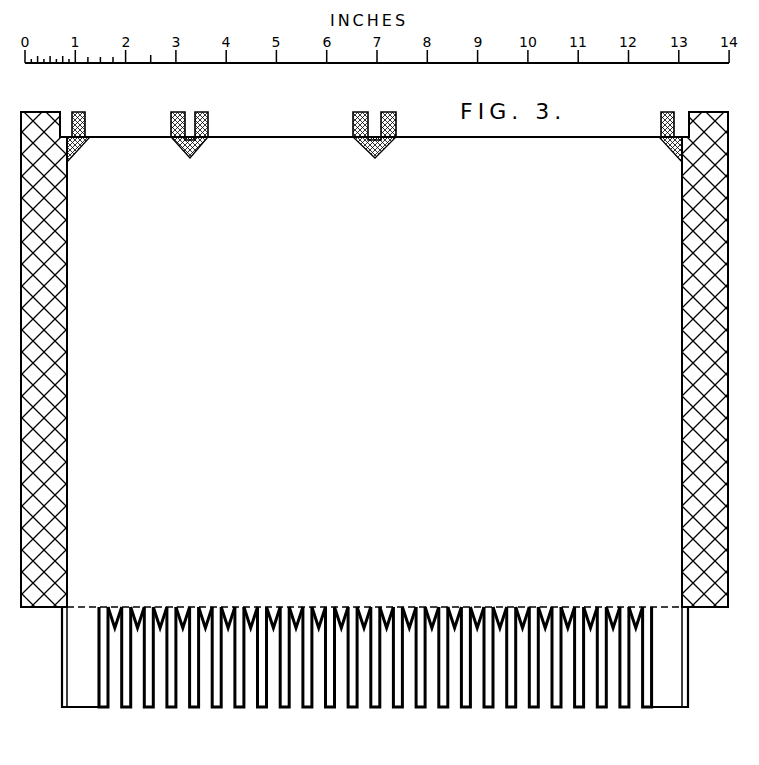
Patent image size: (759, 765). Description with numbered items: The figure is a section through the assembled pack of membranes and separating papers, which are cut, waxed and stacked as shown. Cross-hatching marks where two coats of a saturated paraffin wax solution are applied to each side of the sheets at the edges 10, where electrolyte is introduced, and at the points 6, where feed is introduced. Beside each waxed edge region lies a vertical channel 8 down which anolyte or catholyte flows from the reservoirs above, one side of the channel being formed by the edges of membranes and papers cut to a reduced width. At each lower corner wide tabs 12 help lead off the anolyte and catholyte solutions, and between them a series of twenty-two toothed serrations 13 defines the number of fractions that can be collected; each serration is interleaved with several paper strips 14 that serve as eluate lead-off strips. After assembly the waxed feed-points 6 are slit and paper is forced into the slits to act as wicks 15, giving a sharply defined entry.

The feed-points 6 is at (191, 118).
The vertical channel 8 is at (683, 117).
The edges 10 is at (711, 137).
The wide tabs 12 is at (77, 657).
The toothed serrations 13 is at (205, 619).
The strips 14 is at (640, 695).
The wicks 15 is at (190, 150).